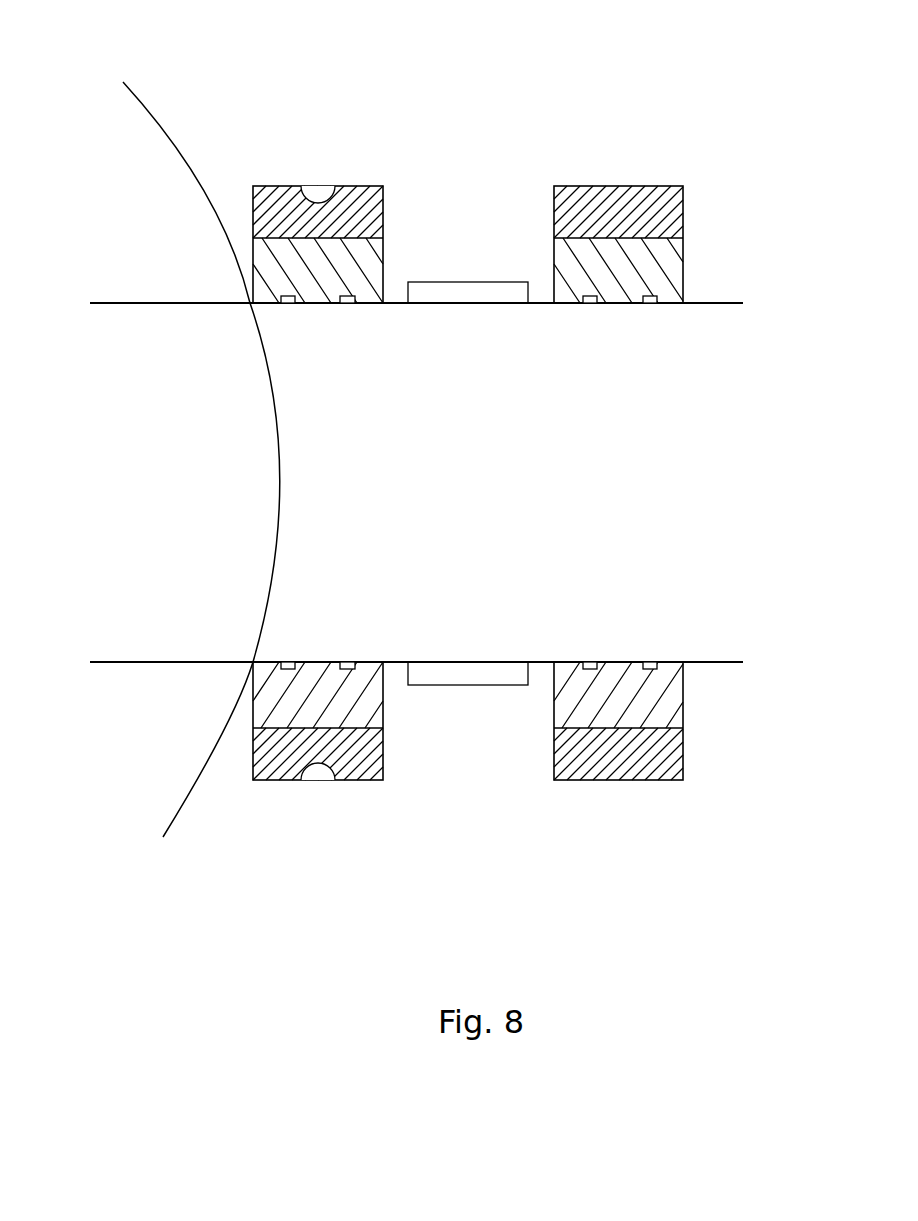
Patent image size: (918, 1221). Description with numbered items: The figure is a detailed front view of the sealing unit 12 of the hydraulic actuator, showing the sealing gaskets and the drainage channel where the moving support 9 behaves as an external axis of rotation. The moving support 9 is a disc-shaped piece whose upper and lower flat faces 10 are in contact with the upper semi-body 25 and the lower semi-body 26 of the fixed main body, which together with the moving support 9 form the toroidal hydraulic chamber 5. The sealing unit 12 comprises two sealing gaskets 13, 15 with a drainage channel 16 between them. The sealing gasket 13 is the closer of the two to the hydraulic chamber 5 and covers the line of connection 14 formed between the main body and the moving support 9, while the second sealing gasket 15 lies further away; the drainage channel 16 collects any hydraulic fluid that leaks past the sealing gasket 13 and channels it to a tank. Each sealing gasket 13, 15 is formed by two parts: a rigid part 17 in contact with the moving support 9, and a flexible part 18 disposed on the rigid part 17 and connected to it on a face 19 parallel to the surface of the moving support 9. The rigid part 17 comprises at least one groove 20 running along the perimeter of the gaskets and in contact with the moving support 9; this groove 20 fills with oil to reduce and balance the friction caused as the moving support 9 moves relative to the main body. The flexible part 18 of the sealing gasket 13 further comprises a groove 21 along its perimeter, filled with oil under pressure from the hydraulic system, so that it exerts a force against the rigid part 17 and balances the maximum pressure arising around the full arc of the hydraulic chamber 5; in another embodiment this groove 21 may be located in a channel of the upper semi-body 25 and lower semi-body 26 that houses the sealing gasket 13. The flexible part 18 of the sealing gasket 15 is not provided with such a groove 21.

The hydraulic chamber 5 is at (108, 557).
The moving support 9 is at (510, 458).
The flat faces 10 is at (732, 307).
The sealing unit 12 is at (478, 130).
The sealing gasket 13 is at (286, 155).
The line of connection 14 is at (215, 303).
The second sealing gasket 15 is at (645, 155).
The drainage channel 16 is at (490, 288).
The rigid part 17 is at (363, 272).
The flexible part 18 is at (360, 192).
The face 19 is at (373, 234).
The groove 20 is at (283, 307).
The groove 21 is at (318, 188).
The upper semi-body 25 is at (200, 144).
The lower semi-body 26 is at (190, 847).